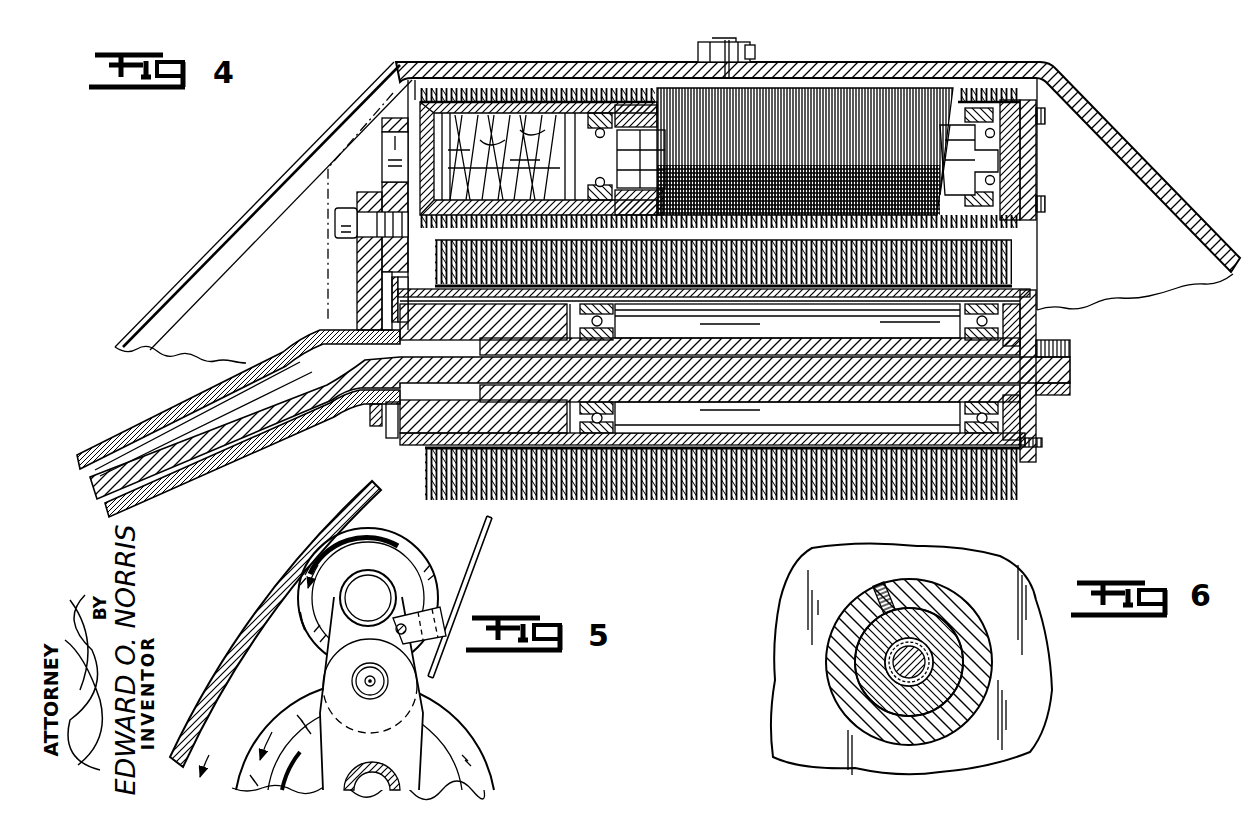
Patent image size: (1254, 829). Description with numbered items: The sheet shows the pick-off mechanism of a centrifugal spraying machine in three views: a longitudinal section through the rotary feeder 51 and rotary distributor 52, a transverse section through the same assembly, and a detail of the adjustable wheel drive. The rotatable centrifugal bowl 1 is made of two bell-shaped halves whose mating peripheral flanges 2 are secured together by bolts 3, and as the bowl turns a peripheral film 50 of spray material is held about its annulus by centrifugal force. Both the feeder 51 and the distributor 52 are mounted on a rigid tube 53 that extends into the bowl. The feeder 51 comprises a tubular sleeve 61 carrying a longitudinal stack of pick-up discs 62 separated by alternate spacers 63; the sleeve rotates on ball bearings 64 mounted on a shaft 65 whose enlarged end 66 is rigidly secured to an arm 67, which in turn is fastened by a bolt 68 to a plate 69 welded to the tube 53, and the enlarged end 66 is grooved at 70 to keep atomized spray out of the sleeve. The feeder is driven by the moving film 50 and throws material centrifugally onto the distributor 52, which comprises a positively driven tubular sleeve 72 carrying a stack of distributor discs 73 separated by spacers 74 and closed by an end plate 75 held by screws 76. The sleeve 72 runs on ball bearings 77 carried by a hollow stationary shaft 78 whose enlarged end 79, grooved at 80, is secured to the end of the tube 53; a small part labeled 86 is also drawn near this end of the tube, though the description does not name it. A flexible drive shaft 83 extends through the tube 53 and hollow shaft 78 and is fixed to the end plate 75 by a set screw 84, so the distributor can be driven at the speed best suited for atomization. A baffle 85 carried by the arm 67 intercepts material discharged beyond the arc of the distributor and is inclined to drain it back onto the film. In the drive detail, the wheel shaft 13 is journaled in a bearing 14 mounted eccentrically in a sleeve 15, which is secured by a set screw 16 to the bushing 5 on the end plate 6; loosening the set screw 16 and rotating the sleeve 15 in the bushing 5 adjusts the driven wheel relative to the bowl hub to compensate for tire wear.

In FIG. 4, the centrifugal bowl 1 is at (1102, 114).
In FIG. 5, the centrifugal bowl 1 is at (250, 605).
In FIG. 4, the peripheral flanges 2 is at (722, 40).
In FIG. 4, the bolts 3 is at (756, 55).
In FIG. 4, the bushing 5 is at (400, 95).
In FIG. 6, the bushing 5 is at (928, 640).
In FIG. 6, the end plate 6 is at (1040, 668).
In FIG. 6, the shaft 13 is at (915, 688).
In FIG. 6, the bearing 14 is at (922, 650).
In FIG. 6, the sleeve 15 is at (868, 687).
In FIG. 6, the set screw 16 is at (890, 584).
In FIG. 5, the peripheral film 50 is at (225, 712).
In FIG. 4, the rotary feeder 51 is at (1045, 182).
In FIG. 5, the rotary feeder 51 is at (447, 572).
In FIG. 4, the rotary distributor 52 is at (1046, 462).
In FIG. 5, the rotary distributor 52 is at (497, 762).
In FIG. 4, the tube 53 is at (175, 404).
In FIG. 5, the tube 53 is at (375, 783).
In FIG. 4, the tubular sleeve 61 is at (422, 100).
In FIG. 4, the pick-up discs 62 is at (897, 96).
In FIG. 5, the pick-up discs 62 is at (432, 597).
In FIG. 4, the spacers 63 is at (644, 98).
In FIG. 4, the ball bearings 64 is at (1012, 182).
In FIG. 4, the shaft 65 is at (962, 150).
In FIG. 4, the enlarged end 66 is at (422, 146).
In FIG. 5, the enlarged end 66 is at (375, 593).
In FIG. 4, the arm 67 is at (400, 183).
In FIG. 5, the arm 67 is at (340, 638).
In FIG. 4, the bolt 68 is at (338, 231).
In FIG. 5, the bolt 68 is at (385, 683).
In FIG. 4, the plate 69 is at (358, 262).
In FIG. 5, the plate 69 is at (410, 727).
In FIG. 4, the groove 70 is at (515, 128).
In FIG. 4, the tubular sleeve 72 is at (732, 436).
In FIG. 4, the distributor discs 73 is at (697, 498).
In FIG. 5, the distributor discs 73 is at (465, 740).
In FIG. 4, the spacers 74 is at (1010, 290).
In FIG. 4, the end plate 75 is at (1042, 410).
In FIG. 4, the screws 76 is at (1044, 440).
In FIG. 4, the ball bearings 77 is at (616, 325).
In FIG. 4, the hollow stationary shaft 78 is at (790, 333).
In FIG. 4, the enlarged end 79 is at (551, 497).
In FIG. 4, the groove 80 is at (382, 428).
In FIG. 4, the flexible drive shaft 83 is at (1075, 370).
In FIG. 4, the set screw 84 is at (1060, 345).
In FIG. 5, the baffle 85 is at (445, 576).
In FIG. 4, the flange 86 is at (372, 420).